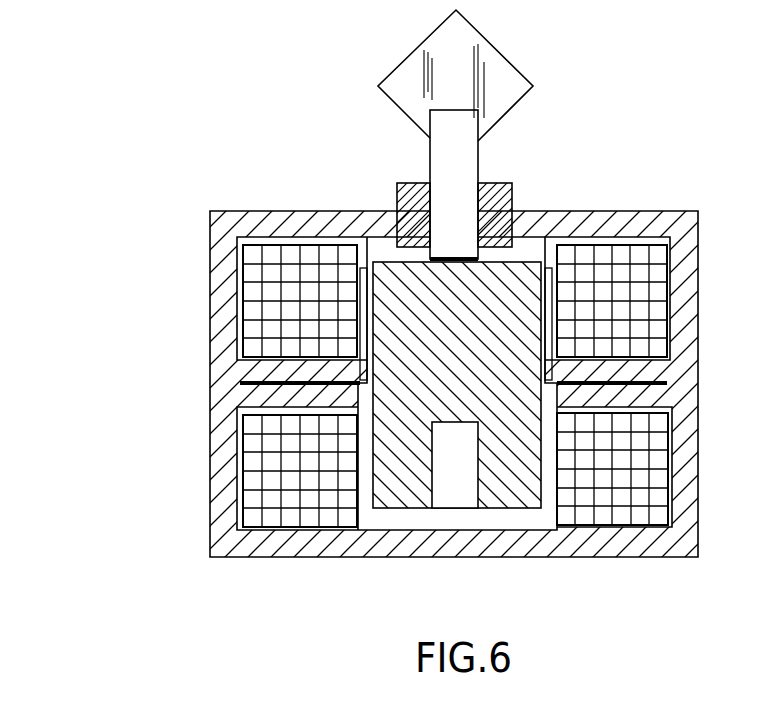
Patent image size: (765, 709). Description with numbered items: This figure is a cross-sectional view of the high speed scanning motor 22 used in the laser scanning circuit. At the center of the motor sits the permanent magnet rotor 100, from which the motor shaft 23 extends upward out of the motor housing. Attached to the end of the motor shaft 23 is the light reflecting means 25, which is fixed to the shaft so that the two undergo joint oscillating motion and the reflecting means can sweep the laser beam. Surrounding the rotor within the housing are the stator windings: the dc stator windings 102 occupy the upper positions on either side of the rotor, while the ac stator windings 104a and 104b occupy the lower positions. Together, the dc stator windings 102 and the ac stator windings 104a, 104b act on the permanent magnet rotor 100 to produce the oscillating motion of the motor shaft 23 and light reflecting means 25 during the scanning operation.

The high speed scanning motor 22 is at (247, 112).
The motor shaft 23 is at (430, 152).
The light reflecting means 25 is at (493, 46).
The permanent magnet rotor 100 is at (403, 510).
The dc stator windings 102 is at (245, 283).
The ac stator winding 104a is at (243, 463).
The ac stator winding 104b is at (612, 469).